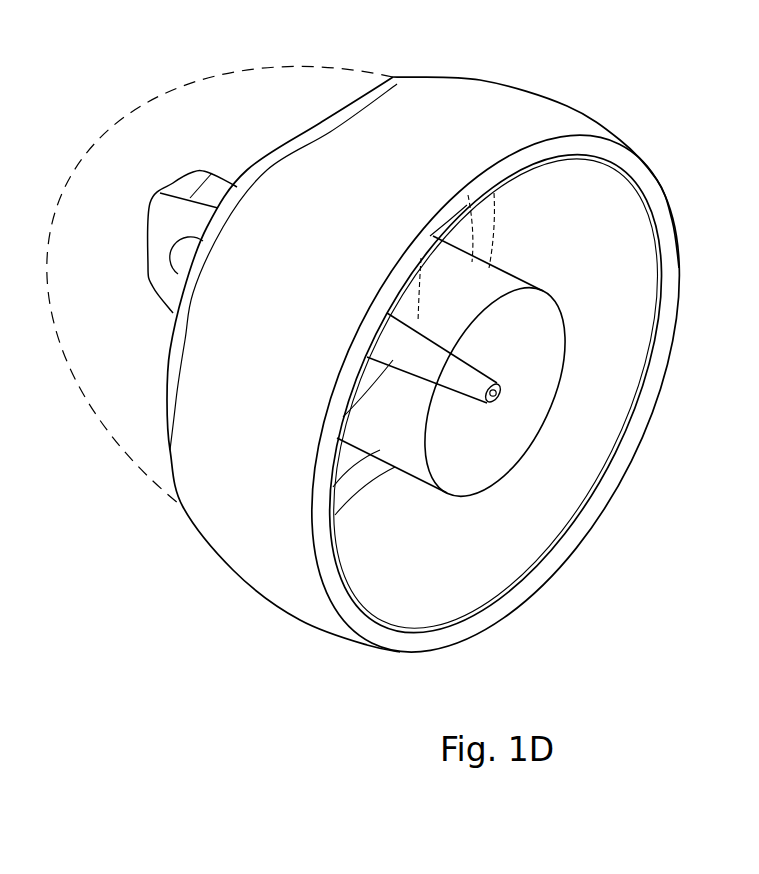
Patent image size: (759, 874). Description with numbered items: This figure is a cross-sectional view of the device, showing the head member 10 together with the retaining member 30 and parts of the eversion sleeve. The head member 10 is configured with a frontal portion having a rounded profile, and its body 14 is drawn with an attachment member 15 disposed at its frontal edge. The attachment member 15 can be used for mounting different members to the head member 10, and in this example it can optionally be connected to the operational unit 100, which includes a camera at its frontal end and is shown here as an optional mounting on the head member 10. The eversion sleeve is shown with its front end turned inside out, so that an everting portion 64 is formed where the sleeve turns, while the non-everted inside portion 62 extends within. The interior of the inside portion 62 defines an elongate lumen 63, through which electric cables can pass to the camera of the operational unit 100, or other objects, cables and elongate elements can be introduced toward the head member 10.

The operational unit 100 is at (291, 80).
The head member 10 is at (567, 110).
The housing body 14 is at (250, 527).
The attachment member 15 is at (150, 246).
The everting portion 64 is at (637, 188).
The retaining member 30 is at (633, 235).
The inside portion 62 is at (500, 383).
The lumen 63 is at (503, 397).